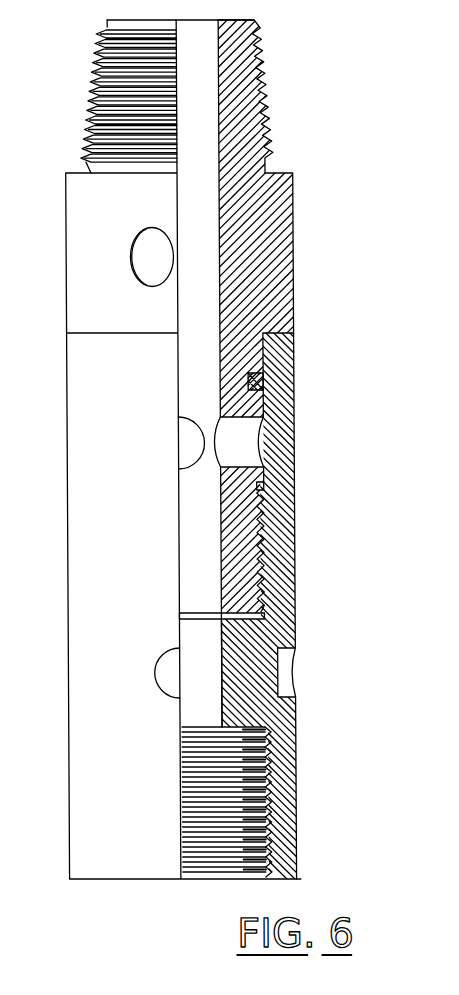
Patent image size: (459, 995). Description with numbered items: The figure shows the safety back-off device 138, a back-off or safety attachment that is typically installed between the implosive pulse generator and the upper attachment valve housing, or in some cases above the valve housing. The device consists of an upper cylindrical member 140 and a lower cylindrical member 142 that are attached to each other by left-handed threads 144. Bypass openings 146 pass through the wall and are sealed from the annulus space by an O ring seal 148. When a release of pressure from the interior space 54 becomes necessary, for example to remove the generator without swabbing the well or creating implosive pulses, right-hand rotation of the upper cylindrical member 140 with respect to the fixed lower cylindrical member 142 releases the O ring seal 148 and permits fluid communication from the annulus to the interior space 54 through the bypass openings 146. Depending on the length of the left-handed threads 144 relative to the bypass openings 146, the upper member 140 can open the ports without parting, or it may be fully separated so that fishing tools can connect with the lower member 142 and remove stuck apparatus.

The interior space 54 is at (195, 581).
The safety back-off device 138 is at (78, 902).
The upper cylindrical member 140 is at (272, 217).
The lower cylindrical member 142 is at (293, 743).
The left-handed threads 144 is at (260, 555).
The bypass openings 146 is at (193, 440).
The O ring seal 148 is at (257, 380).